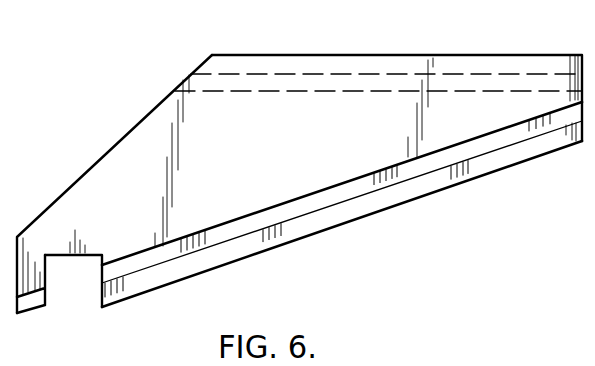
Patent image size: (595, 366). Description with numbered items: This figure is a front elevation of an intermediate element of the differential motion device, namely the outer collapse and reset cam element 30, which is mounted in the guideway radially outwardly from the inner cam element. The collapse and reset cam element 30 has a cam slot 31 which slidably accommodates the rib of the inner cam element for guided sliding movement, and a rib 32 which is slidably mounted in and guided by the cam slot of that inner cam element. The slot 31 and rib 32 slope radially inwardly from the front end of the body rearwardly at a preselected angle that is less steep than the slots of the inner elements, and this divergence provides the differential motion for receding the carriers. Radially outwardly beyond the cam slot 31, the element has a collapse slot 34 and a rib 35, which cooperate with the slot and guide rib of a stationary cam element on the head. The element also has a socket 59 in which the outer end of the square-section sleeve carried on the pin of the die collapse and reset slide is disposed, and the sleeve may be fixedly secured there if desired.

The collapse and reset cam element 30 is at (138, 106).
The cam slot 31 is at (350, 186).
The rib 32 is at (463, 181).
The collapse slot 34 is at (367, 77).
The rib 35 is at (458, 62).
The socket 59 is at (101, 278).